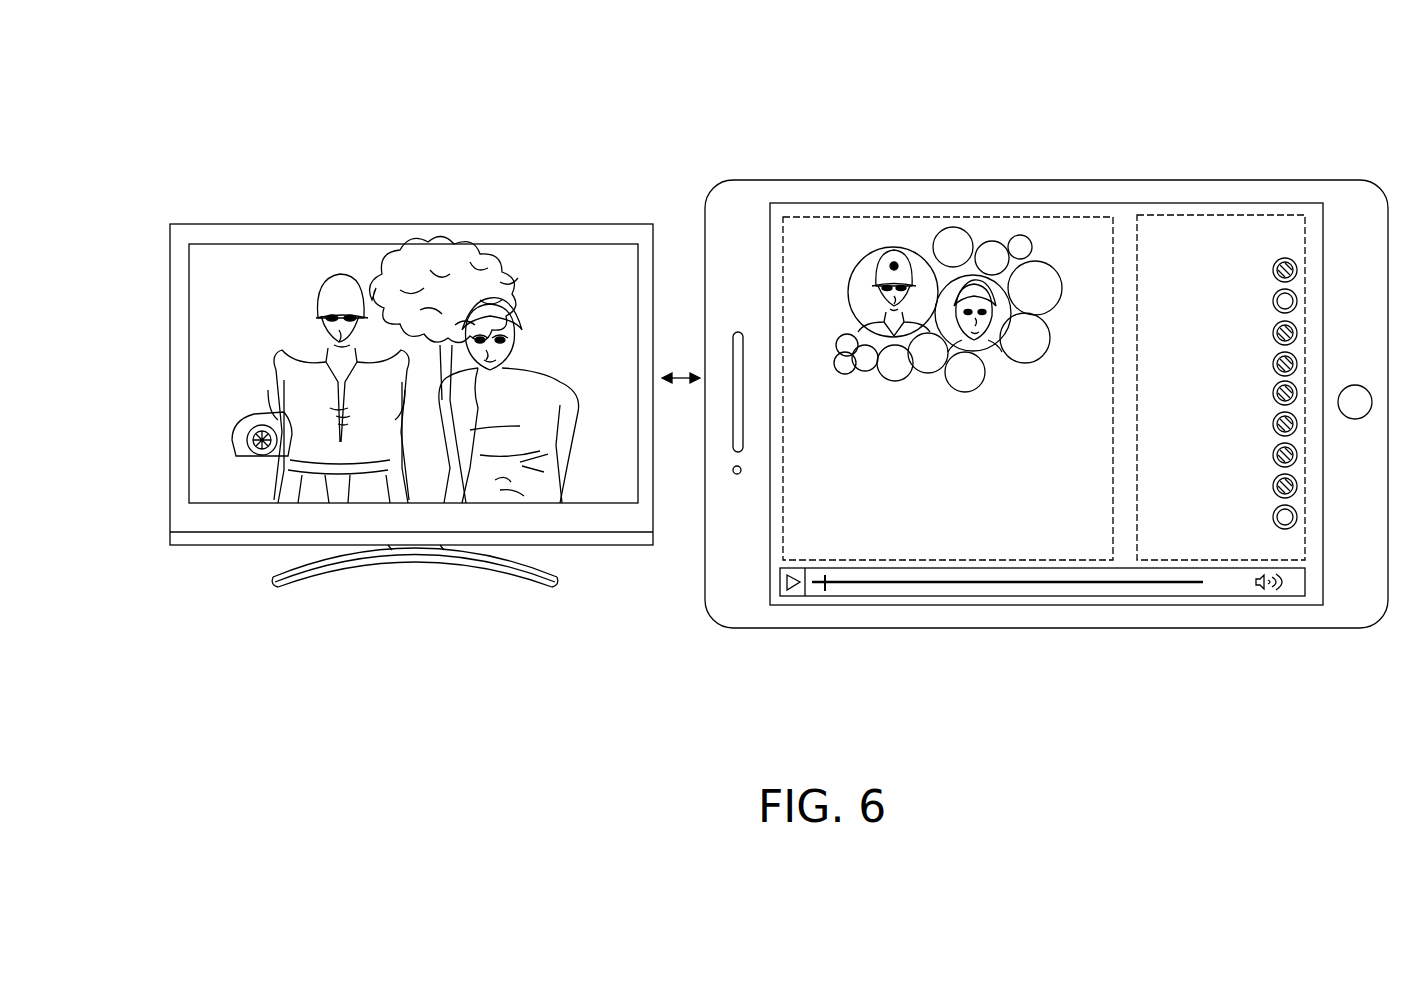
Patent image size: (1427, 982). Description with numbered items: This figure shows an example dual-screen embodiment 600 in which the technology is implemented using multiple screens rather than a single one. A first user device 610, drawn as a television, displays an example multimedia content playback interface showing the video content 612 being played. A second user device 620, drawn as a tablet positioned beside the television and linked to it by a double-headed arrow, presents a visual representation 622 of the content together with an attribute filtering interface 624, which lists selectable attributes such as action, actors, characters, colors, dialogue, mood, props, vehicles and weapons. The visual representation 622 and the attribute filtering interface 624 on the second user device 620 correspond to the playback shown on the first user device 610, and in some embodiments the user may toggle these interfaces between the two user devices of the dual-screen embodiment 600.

The dual-screen embodiment 600 is at (256, 64).
The first user device 610 is at (238, 224).
The media content displayed on television 612 is at (248, 299).
The second user device 620 is at (757, 180).
The visual representation 622 is at (783, 245).
The attribute filtering interface 624 is at (1308, 230).